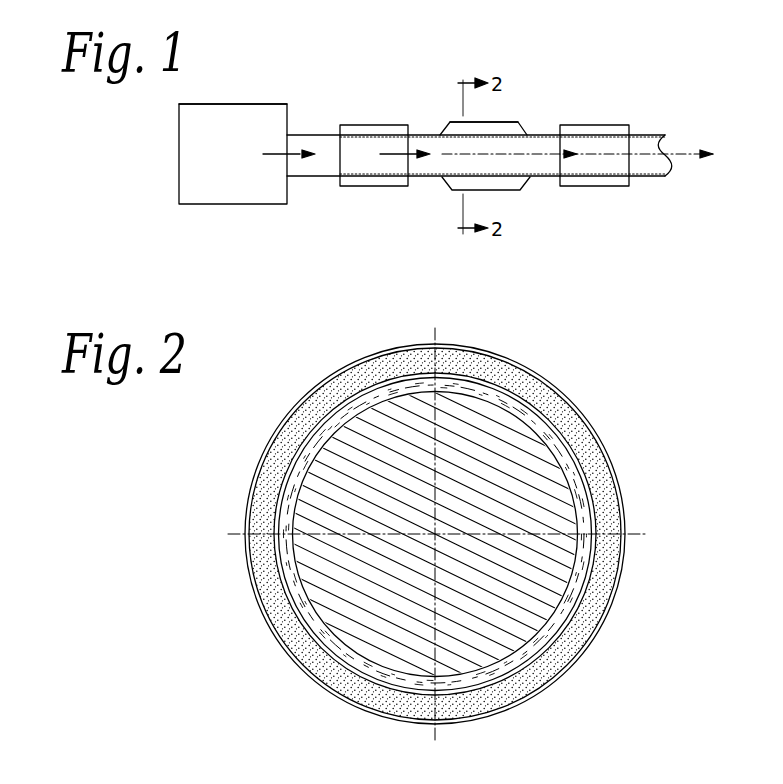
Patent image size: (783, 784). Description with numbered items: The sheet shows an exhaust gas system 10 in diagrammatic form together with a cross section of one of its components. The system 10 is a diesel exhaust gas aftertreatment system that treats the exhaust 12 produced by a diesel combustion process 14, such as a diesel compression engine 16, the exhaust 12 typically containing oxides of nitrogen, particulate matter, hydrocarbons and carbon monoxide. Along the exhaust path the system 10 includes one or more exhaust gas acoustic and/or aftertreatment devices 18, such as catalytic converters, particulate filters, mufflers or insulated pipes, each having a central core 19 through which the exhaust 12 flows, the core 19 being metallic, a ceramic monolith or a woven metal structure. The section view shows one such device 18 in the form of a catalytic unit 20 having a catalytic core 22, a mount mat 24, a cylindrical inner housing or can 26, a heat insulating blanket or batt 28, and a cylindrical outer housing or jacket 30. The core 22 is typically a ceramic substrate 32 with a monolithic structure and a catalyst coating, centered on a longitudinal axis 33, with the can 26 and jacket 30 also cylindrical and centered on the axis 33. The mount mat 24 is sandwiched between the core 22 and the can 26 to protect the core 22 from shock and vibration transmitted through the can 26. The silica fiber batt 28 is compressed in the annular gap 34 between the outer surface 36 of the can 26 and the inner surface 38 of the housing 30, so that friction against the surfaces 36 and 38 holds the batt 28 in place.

In FIG. 1, the exhaust gas system 10 is at (440, 56).
In FIG. 1, the exhaust 12 is at (293, 154).
In FIG. 1, the diesel combustion process 14 is at (219, 166).
In FIG. 1, the diesel compression engine 16 is at (238, 100).
In FIG. 1, the exhaust gas acoustic and/or aftertreatment device 18 is at (352, 166).
In FIG. 2, the exhaust gas acoustic and/or aftertreatment device 18 is at (570, 353).
In FIG. 1, the central core 19 is at (365, 140).
In FIG. 2, the central core 19 is at (473, 388).
In FIG. 2, the catalytic unit 20 is at (572, 390).
In FIG. 2, the catalytic core 22 is at (556, 450).
In FIG. 2, the mount mat 24 is at (592, 452).
In FIG. 2, the cylindrical inner housing or can 26 is at (612, 480).
In FIG. 2, the heat insulating blanket or batt 28 is at (612, 503).
In FIG. 1, the cylindrical outer housing or jacket 30 is at (448, 195).
In FIG. 2, the cylindrical outer housing or jacket 30 is at (627, 525).
In FIG. 2, the ceramic substrate 32 is at (568, 558).
In FIG. 2, the longitudinal axis 33 is at (435, 537).
In FIG. 1, the annular gap 34 is at (508, 155).
In FIG. 2, the annular gap 34 is at (337, 395).
In FIG. 2, the outer surface of the can 36 is at (367, 427).
In FIG. 2, the inner surface of the housing 38 is at (280, 450).